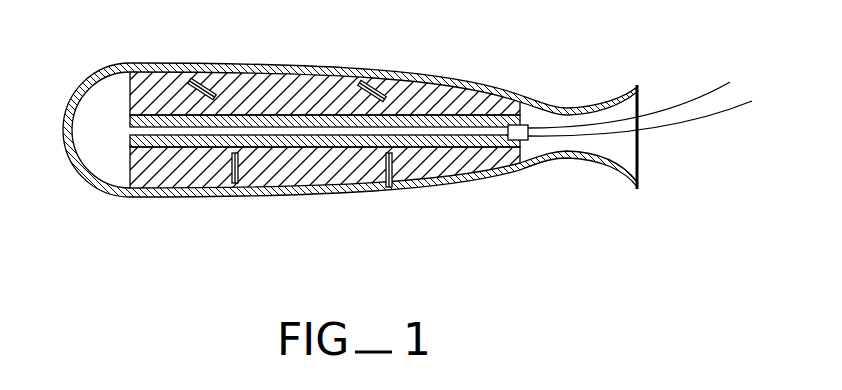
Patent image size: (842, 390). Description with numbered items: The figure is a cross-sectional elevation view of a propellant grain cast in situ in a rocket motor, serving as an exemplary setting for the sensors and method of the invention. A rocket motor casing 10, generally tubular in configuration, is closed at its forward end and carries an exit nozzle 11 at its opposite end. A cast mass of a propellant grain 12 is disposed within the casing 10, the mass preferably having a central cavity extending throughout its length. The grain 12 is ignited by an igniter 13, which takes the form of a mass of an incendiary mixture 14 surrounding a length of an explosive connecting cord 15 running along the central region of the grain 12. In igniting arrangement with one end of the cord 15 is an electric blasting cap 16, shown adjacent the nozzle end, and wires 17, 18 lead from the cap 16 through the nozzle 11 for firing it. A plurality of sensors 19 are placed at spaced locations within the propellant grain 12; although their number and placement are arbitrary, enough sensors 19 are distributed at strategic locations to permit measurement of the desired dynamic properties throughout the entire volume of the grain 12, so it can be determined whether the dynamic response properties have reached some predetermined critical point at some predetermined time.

The rocket motor casing 10 is at (322, 196).
The exit nozzle 11 is at (583, 106).
The propellant grain 12 is at (273, 168).
The igniter 13 is at (265, 112).
The incendiary mixture 14 is at (321, 118).
The explosive connecting cord 15 is at (472, 133).
The electric blasting cap 16 is at (523, 140).
The wire 17 is at (698, 98).
The wire 18 is at (718, 113).
The sensors 19 is at (203, 78).